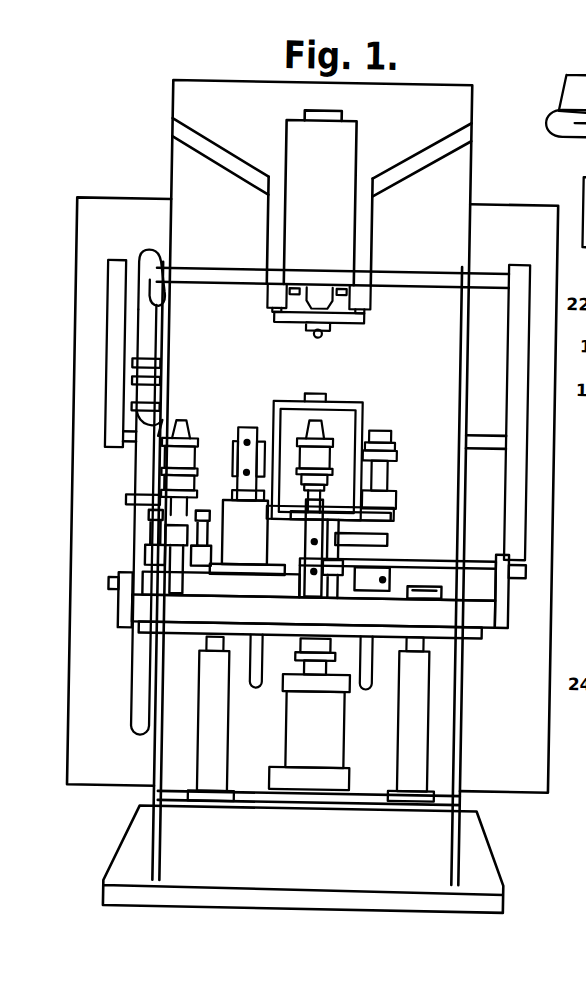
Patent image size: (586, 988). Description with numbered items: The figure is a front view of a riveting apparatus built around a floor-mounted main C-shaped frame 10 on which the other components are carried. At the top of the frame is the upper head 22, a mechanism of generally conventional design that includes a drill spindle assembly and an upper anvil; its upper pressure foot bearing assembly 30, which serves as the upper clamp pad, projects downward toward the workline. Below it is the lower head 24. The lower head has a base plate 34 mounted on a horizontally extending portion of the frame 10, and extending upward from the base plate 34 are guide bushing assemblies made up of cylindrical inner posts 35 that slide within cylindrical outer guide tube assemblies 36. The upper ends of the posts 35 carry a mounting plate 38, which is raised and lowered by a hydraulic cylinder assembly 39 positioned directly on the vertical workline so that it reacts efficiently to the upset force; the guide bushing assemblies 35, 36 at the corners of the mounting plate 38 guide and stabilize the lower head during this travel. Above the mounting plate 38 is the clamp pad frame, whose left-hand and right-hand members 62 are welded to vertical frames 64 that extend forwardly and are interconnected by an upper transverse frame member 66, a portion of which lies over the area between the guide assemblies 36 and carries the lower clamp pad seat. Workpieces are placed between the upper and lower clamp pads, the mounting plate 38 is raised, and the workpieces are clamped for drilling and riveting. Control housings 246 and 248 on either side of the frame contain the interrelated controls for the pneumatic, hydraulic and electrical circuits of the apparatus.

The main C-shaped frame 10 is at (157, 88).
The upper head 22 is at (263, 231).
The lower head 24 is at (414, 525).
The upper pressure foot bearing assembly 30 is at (326, 333).
The base plate 34 is at (258, 784).
The cylindrical inner posts 35 is at (213, 650).
The cylindrical outer guide tube assemblies 36 is at (208, 757).
The mounting plate 38 is at (167, 654).
The hydraulic cylinder assembly 39 is at (331, 746).
The left-hand and right-hand members 62 is at (399, 449).
The vertical frames 64 is at (274, 407).
The upper transverse frame member 66 is at (354, 373).
The control housing 246 is at (520, 260).
The control housing 248 is at (117, 263).